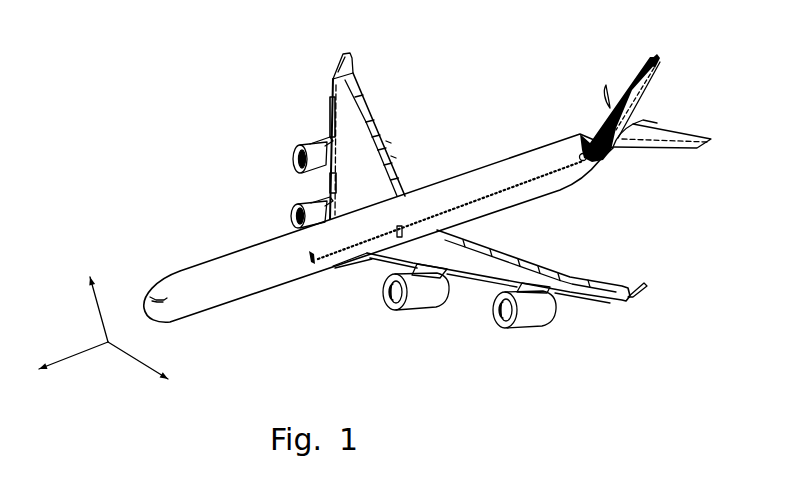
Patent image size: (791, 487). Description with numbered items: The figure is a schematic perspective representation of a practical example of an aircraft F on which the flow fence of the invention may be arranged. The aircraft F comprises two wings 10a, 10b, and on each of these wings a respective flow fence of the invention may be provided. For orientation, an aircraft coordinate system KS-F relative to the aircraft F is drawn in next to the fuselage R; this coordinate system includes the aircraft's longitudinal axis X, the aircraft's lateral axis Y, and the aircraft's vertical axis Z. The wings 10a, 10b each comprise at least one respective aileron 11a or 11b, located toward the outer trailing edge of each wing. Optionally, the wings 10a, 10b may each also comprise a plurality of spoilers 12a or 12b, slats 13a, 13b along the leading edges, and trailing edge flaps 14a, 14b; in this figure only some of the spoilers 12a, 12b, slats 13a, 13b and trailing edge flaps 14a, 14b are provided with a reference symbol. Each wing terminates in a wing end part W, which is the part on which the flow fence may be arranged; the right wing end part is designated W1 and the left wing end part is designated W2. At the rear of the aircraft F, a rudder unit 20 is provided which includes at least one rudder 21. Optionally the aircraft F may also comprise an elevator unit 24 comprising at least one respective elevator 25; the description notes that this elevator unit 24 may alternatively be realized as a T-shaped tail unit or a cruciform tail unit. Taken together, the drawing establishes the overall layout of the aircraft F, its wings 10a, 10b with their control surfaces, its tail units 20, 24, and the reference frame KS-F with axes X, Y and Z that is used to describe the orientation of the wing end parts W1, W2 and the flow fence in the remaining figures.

The aircraft F is at (224, 206).
The fuselage R is at (590, 203).
The wing end part W is at (343, 44).
The right wing end part W1 is at (340, 65).
The left wing end part W2 is at (640, 290).
The wing 10a is at (327, 91).
The wing 10b is at (578, 299).
The aileron 11a is at (354, 93).
The aileron 11b is at (584, 278).
The spoiler 12a is at (392, 163).
The spoiler 12b is at (456, 243).
The slat 13a is at (324, 106).
The slat 13b is at (485, 287).
The trailing edge flap 14a is at (372, 137).
The trailing edge flap 14b is at (541, 279).
The rudder unit 20 is at (634, 64).
The rudder 21 is at (660, 64).
The elevator unit 24 is at (650, 147).
The elevator 25 is at (673, 130).
The aircraft coordinate system KS-F is at (93, 402).
The aircraft's longitudinal axis X is at (73, 377).
The aircraft's lateral axis Y is at (146, 360).
The aircraft's vertical axis Z is at (102, 307).